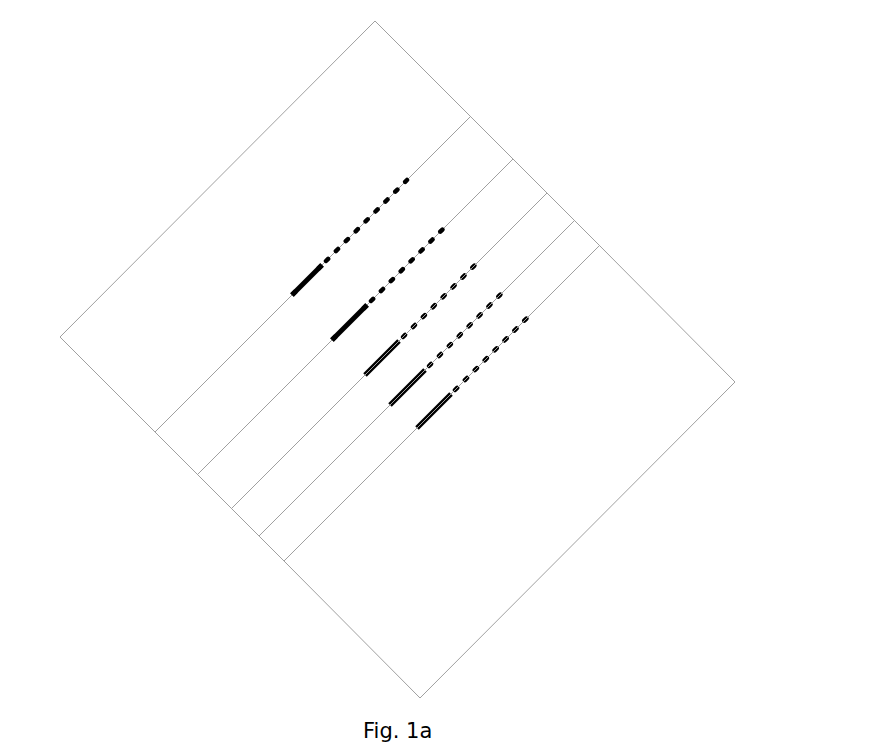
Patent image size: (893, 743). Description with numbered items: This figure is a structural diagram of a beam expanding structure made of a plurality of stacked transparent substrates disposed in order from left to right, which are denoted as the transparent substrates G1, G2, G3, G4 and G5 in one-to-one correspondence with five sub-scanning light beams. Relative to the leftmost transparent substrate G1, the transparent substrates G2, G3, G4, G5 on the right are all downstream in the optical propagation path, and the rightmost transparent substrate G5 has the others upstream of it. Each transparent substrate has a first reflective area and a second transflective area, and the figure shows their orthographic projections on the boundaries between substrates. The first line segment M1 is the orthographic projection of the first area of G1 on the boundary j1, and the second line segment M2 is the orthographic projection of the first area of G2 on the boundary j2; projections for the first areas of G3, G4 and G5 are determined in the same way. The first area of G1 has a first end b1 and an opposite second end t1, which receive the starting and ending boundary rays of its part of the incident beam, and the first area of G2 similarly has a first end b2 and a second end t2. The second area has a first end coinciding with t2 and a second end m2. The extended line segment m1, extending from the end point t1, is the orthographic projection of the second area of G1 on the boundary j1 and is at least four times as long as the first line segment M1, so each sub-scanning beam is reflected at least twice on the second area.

The first transparent substrate G1 is at (265, 226).
The second transparent substrate G2 is at (334, 296).
The third transparent substrate G3 is at (373, 334).
The fourth transparent substrate G4 is at (403, 364).
The fifth transparent substrate G5 is at (429, 391).
The boundary j1 is at (342, 238).
The boundary j2 is at (380, 284).
The first line segment M1 is at (300, 278).
The second line segment M2 is at (343, 321).
The extended line segment m1 is at (366, 220).
The second end of second area m2 is at (410, 261).
The second end of first area t1 is at (316, 258).
The second end of first area t2 is at (356, 298).
The first end of first area b1 is at (281, 296).
The first end of first area b2 is at (322, 338).